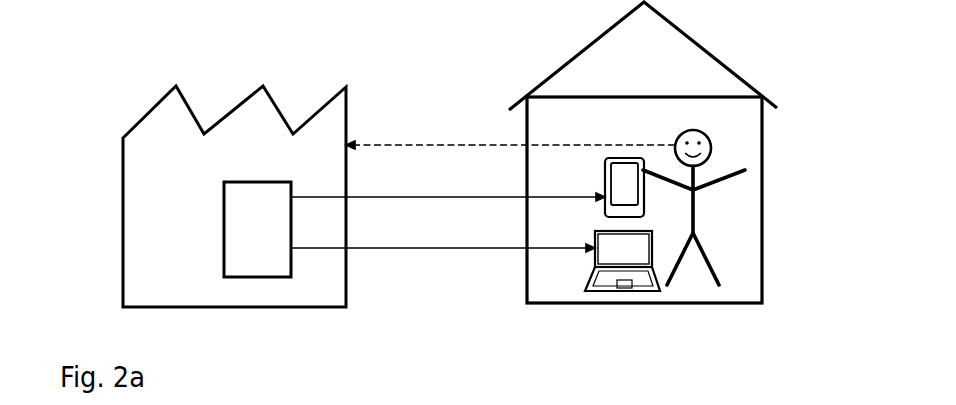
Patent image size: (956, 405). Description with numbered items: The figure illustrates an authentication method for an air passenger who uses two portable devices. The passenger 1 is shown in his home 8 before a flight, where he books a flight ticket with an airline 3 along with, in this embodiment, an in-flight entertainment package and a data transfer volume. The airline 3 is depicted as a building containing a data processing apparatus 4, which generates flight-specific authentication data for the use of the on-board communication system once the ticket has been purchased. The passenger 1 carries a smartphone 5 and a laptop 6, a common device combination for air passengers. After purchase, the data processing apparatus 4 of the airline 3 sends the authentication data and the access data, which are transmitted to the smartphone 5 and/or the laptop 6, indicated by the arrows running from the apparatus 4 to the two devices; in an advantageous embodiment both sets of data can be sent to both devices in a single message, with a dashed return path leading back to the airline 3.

The passenger 1 is at (695, 212).
The airline 3 is at (330, 288).
The data processing apparatus 4 is at (278, 225).
The smartphone 5 is at (630, 160).
The laptop 6 is at (625, 292).
The home 8 is at (762, 163).